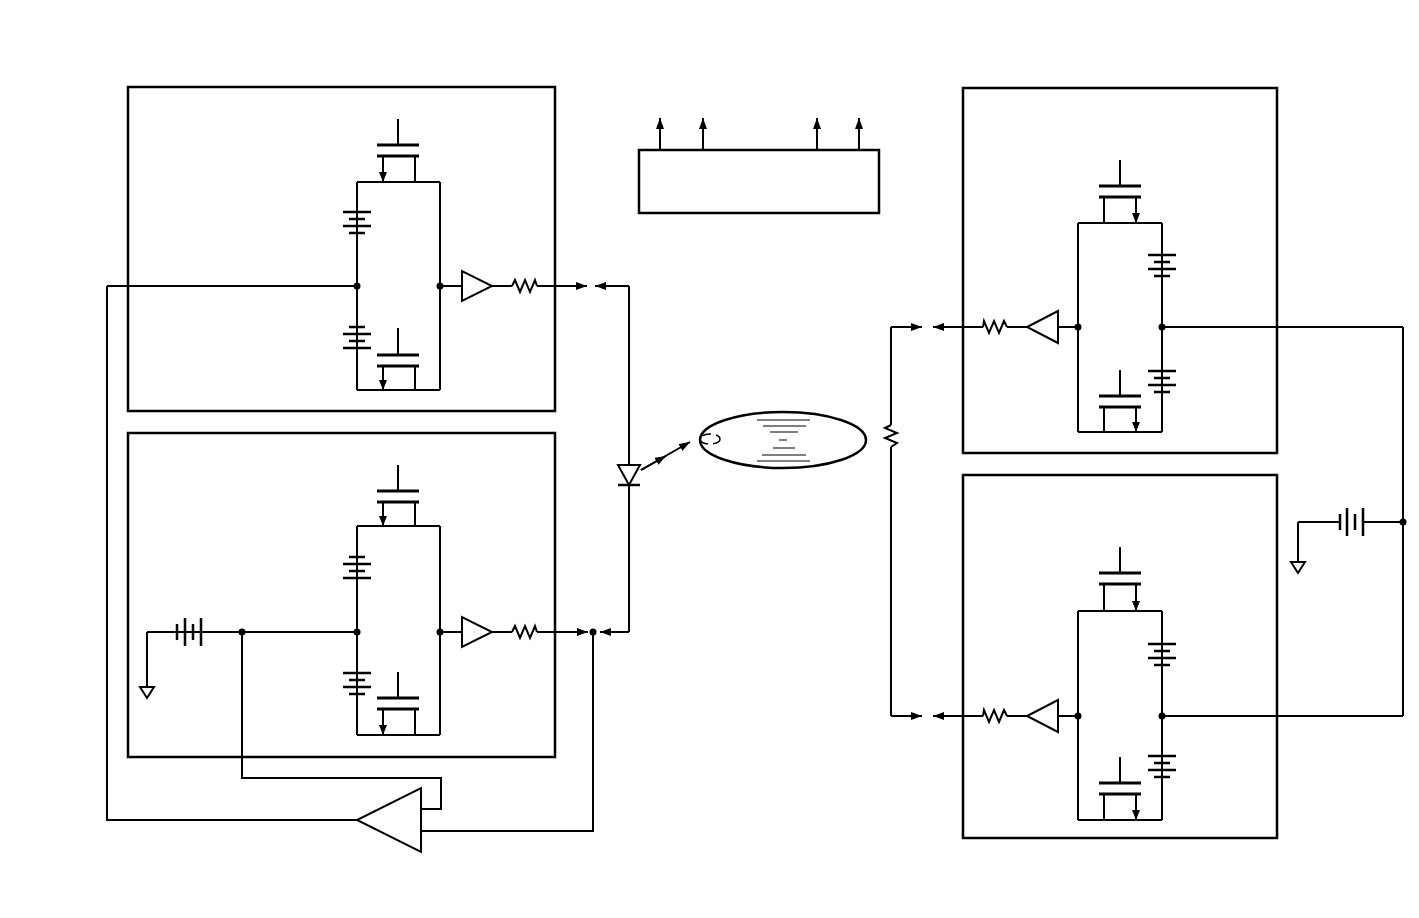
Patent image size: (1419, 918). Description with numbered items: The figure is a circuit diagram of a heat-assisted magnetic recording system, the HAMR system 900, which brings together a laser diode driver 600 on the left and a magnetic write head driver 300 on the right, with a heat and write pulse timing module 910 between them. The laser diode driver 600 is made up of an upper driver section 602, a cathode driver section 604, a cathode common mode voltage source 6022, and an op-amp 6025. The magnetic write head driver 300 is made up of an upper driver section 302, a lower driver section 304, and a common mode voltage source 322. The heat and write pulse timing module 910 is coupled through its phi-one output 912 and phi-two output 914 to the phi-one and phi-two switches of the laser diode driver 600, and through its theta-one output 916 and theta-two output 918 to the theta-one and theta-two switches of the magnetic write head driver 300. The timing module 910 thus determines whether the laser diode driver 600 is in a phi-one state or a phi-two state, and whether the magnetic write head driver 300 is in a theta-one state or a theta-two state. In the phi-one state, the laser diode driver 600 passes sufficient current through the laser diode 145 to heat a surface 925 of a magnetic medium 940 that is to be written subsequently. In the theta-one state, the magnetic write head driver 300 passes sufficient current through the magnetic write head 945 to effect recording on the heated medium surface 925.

The HAMR system 900 is at (730, 806).
The laser diode driver 600 is at (520, 77).
The upper driver section 602 is at (357, 249).
The cathode driver section 604 is at (495, 757).
The cathode common mode voltage source 6022 is at (192, 668).
The op-amp 6025 is at (383, 838).
The laser diode 145 is at (620, 475).
The heat and write pulse timing module 910 is at (758, 213).
The output Φ1 912 is at (658, 91).
The output Φ2 914 is at (703, 91).
The output θ1 916 is at (815, 91).
The output θ2 918 is at (859, 91).
The surface 925 is at (705, 421).
The magnetic medium 940 is at (790, 413).
The magnetic write head 945 is at (884, 446).
The magnetic write head driver 300 is at (1312, 150).
The upper driver section 302 is at (1278, 232).
The lower driver section 304 is at (963, 783).
The common mode voltage source 322 is at (1352, 549).